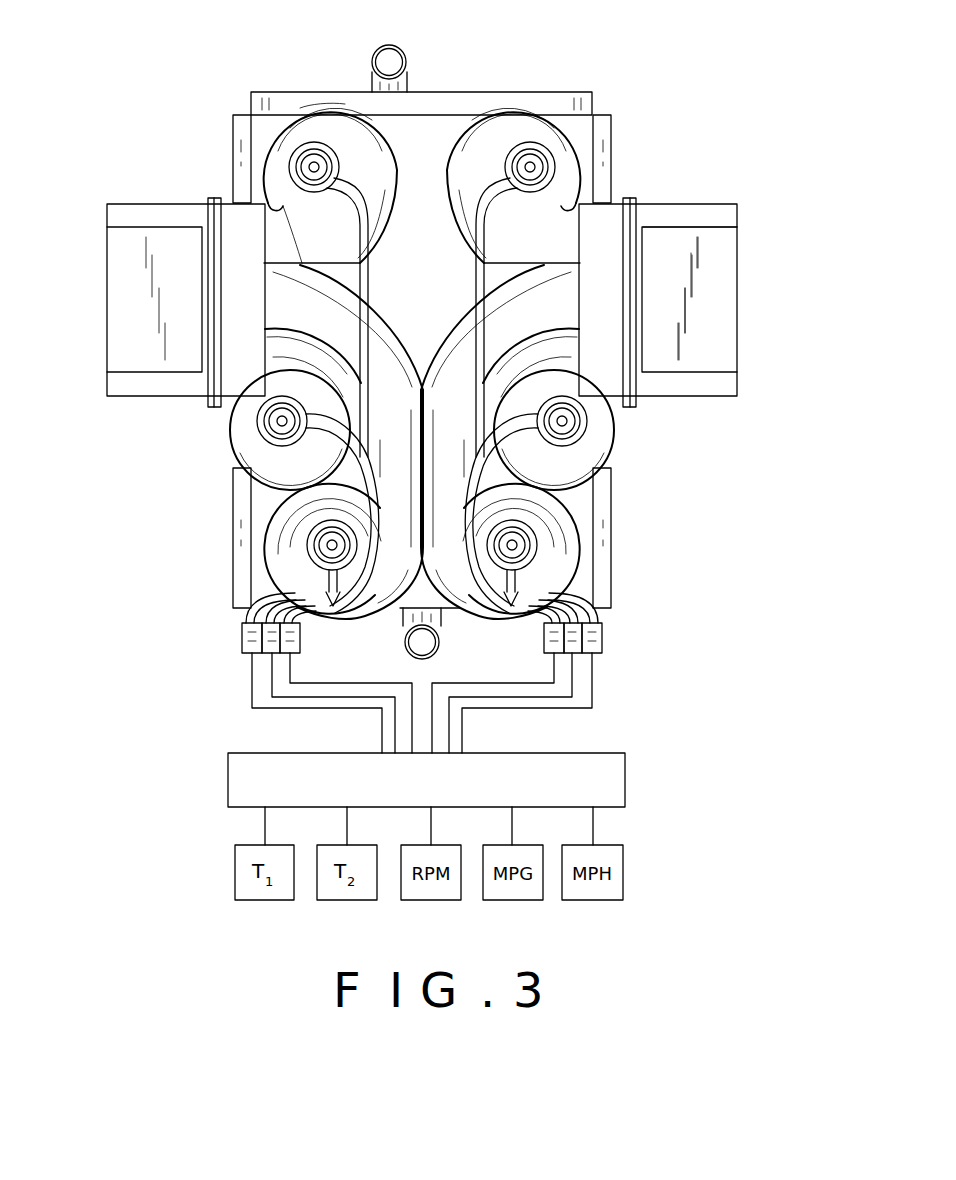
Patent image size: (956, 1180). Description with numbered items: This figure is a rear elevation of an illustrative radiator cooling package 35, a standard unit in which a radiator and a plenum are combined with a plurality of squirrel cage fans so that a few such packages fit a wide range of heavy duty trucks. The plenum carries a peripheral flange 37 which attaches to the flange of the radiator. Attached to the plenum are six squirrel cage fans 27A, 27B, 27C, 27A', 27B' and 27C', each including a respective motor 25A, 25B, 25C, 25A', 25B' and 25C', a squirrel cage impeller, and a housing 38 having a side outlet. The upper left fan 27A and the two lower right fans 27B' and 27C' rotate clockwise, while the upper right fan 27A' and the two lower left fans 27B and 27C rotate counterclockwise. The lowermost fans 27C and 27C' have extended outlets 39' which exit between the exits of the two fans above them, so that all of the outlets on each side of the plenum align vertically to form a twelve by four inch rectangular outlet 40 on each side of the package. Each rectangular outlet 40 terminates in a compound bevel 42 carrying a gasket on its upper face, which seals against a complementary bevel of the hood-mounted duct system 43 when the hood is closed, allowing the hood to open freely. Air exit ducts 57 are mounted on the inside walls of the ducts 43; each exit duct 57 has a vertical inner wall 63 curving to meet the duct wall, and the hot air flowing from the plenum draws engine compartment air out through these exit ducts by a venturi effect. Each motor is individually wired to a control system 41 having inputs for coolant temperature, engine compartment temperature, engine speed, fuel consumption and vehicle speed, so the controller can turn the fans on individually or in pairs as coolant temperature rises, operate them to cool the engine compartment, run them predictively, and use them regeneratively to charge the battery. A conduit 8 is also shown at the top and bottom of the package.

The conduit 8 is at (390, 57).
The standard package 35 is at (502, 86).
The fan housing 38 is at (342, 112).
The upper left squirrel cage fan 27A is at (266, 273).
The motor of fan 27A 25A is at (246, 154).
The extended outlet 39' is at (213, 223).
The compound bevel 42 is at (207, 198).
The rectangular outlet 40 is at (263, 278).
The duct system 43 is at (100, 318).
The upper right squirrel cage fan 27A' is at (576, 266).
The motor of fan 27A' 25A' is at (613, 152).
The air exit duct 57 is at (695, 227).
The vertical inner wall 63 is at (679, 264).
The motor of fan 27B 25B is at (189, 421).
The motor of fan 27B' 25B' is at (655, 421).
The middle left squirrel cage fan 27B is at (243, 471).
The middle right squirrel cage fan 27B' is at (598, 471).
The peripheral flange 37 is at (242, 503).
The lowermost left squirrel cage fan 27C is at (252, 553).
The lowermost right squirrel cage fan 27C' is at (593, 553).
The motor of fan 27C 25C is at (248, 562).
The motor of fan 27C' 25C' is at (616, 532).
The control system 41 is at (610, 772).